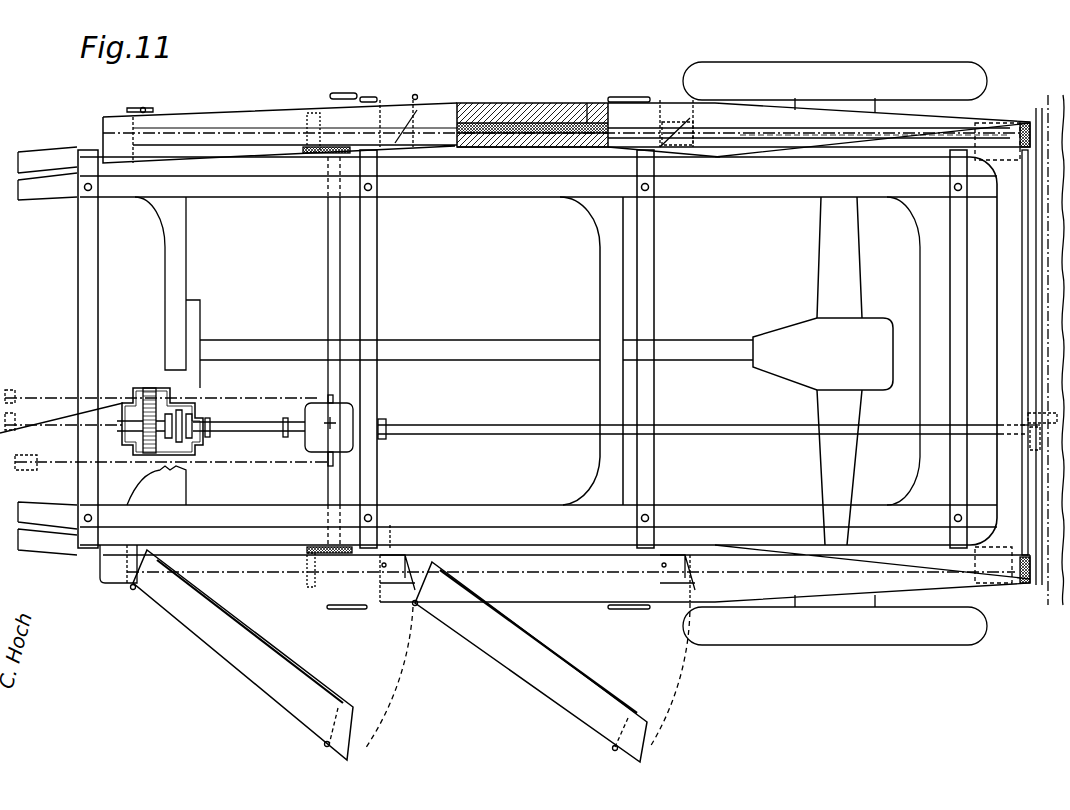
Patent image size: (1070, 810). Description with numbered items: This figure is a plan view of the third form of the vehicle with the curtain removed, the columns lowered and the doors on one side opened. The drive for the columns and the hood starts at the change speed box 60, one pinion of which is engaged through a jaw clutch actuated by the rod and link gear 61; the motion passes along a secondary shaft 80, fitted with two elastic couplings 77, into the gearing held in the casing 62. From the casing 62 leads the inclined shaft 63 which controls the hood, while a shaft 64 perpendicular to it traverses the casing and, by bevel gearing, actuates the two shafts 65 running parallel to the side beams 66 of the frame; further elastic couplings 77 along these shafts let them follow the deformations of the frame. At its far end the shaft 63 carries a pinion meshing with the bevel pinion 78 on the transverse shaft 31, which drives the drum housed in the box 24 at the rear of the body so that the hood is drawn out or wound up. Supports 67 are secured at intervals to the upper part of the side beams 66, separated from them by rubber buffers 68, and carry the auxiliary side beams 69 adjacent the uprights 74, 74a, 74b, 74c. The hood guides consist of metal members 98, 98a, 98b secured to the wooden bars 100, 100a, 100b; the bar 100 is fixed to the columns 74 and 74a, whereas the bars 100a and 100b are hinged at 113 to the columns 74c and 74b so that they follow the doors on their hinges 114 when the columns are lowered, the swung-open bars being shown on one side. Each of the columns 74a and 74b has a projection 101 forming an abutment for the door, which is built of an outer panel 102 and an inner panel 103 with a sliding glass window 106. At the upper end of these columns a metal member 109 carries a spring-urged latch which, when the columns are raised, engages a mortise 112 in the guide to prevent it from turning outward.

The box 24 is at (1043, 585).
The transverse shaft 31 is at (1030, 488).
The change speed box 60 is at (190, 388).
The rod and link gear 61 is at (72, 430).
The casing 62 is at (312, 440).
The shaft 63 is at (540, 428).
The shaft 64 is at (328, 285).
The shafts 65 is at (752, 134).
The side beams 66 is at (750, 195).
The supports 67 is at (80, 260).
The buffers 68 is at (656, 178).
The auxiliary side beams 69 is at (435, 158).
The upright 74 is at (1024, 128).
The upright 74a is at (690, 548).
The upright 74b is at (388, 108).
The upright 74c is at (84, 578).
The elastic couplings 77 is at (211, 424).
The bevel pinion 78 is at (1032, 425).
The secondary shaft 80 is at (240, 430).
The metal member 98 is at (824, 145).
The metal member 98a is at (575, 660).
The metal member 98b is at (256, 636).
The wooden bar 100 is at (958, 124).
The wooden bar 100a is at (508, 690).
The wooden bar 100b is at (215, 670).
The projection 101 is at (380, 565).
The panel 102 is at (530, 147).
The inner panel 103 is at (535, 110).
The glass window 106 is at (592, 118).
The metal member 109 is at (400, 556).
The mortise 112 is at (380, 580).
The hinge 113 is at (143, 107).
The hinges 114 is at (406, 608).